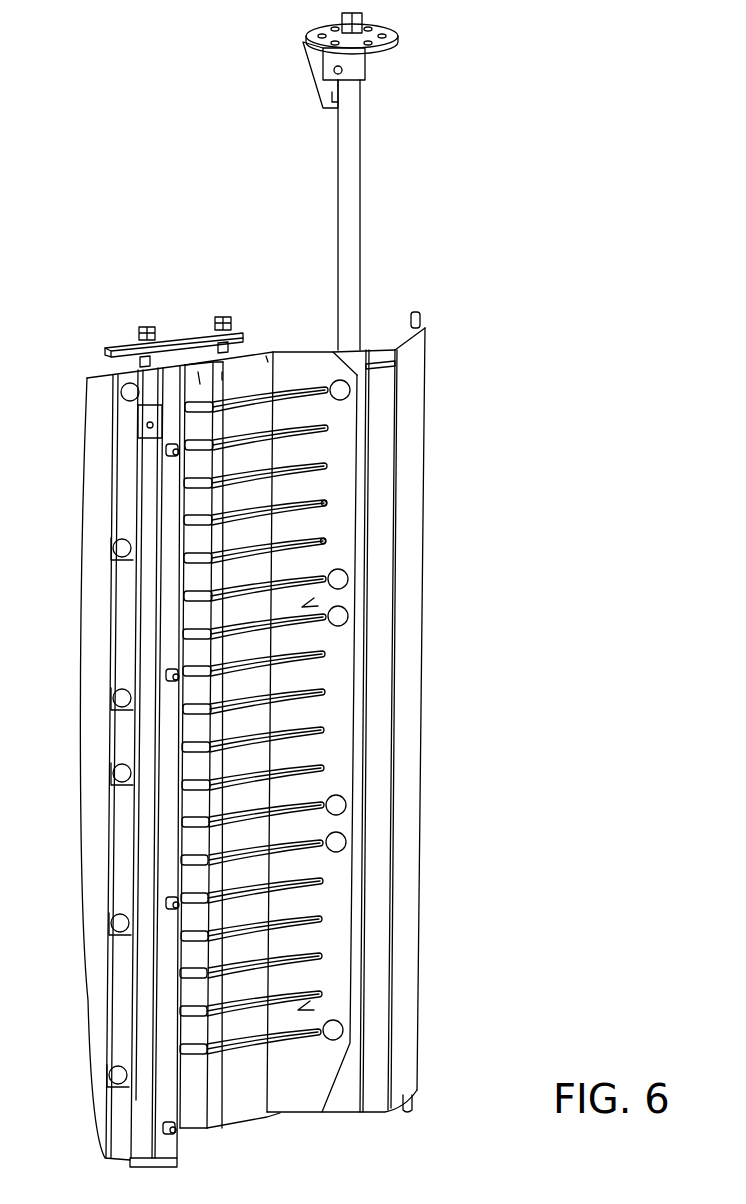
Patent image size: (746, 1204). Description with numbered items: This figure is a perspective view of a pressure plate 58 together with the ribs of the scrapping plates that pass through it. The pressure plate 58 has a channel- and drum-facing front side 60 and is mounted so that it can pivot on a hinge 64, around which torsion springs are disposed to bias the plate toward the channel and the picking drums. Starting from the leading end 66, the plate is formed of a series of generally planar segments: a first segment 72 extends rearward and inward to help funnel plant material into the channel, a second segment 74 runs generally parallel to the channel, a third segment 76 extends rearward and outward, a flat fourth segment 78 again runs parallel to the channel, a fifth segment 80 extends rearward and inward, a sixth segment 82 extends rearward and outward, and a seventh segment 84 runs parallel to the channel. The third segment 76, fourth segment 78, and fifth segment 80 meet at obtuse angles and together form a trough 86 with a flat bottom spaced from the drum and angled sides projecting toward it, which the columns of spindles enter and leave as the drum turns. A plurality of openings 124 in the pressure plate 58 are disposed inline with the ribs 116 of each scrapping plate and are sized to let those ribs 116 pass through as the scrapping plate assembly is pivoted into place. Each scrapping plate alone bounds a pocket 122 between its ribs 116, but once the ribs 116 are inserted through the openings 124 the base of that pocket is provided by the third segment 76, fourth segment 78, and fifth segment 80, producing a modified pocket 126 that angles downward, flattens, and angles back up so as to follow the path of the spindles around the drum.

The pressure plate 58 is at (380, 718).
The front side 60 is at (268, 360).
The hinge 64 is at (365, 193).
The leading end 66 is at (422, 765).
The first segment 72 is at (415, 342).
The second segment 74 is at (382, 355).
The third segment 76 is at (316, 362).
The fourth segment 78 is at (247, 362).
The fifth segment 80 is at (222, 375).
The sixth segment 82 is at (200, 380).
The seventh segment 84 is at (135, 378).
The trough 86 is at (298, 1010).
The ribs 116 is at (293, 503).
The pocket 122 is at (240, 495).
The openings 124 is at (323, 541).
The modified pocket 126 is at (302, 607).